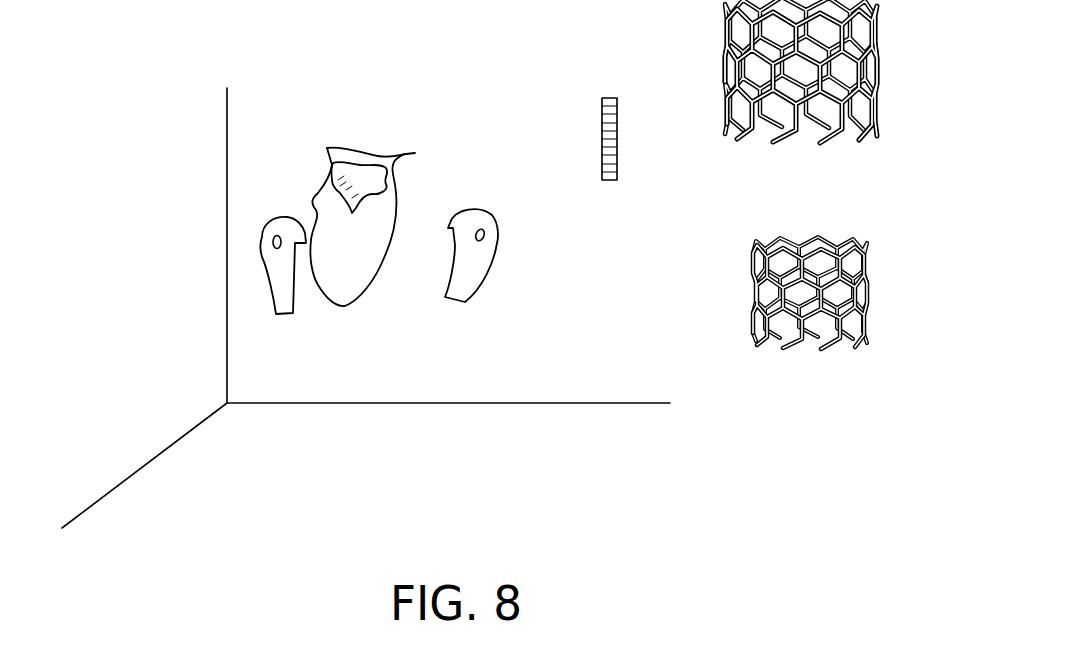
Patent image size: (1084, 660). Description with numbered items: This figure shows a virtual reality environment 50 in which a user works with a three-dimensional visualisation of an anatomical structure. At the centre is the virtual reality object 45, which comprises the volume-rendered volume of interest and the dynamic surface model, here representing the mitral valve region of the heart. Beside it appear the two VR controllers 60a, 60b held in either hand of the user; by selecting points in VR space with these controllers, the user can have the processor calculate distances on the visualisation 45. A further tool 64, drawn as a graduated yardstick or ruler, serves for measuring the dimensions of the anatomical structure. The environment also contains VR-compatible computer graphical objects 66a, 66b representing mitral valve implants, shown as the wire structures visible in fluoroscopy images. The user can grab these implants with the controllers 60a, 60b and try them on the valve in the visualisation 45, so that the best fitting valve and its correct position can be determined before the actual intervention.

The virtual reality object 45 is at (310, 135).
The VR environment 50 is at (122, 282).
The controller 60a is at (272, 292).
The VR controller 60b is at (462, 285).
The tool 64 is at (609, 181).
The VR-compatible computer graphical object 66a is at (727, 80).
The VR-compatible computer graphical object 66b is at (863, 285).